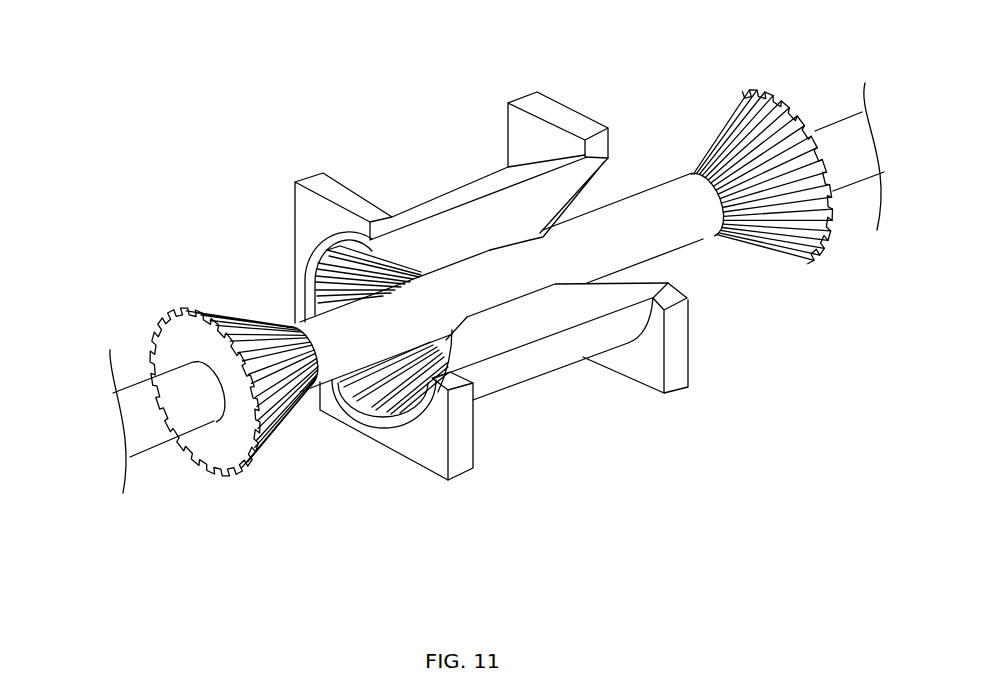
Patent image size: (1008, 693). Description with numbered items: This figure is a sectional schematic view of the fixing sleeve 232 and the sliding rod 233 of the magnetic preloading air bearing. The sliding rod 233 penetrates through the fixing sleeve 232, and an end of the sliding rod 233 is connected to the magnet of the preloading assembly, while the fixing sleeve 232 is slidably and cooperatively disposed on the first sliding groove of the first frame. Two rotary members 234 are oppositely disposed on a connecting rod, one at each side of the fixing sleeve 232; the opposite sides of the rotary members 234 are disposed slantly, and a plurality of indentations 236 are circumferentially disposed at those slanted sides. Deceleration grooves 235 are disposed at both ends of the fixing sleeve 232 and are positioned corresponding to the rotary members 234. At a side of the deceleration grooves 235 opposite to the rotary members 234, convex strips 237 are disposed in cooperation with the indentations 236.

The fixing sleeve 232 is at (455, 186).
The sliding rod 233 is at (153, 435).
The rotary member 234 is at (183, 333).
The deceleration groove 235 is at (450, 335).
The indentation 236 is at (768, 122).
The convex strip 237 is at (350, 257).